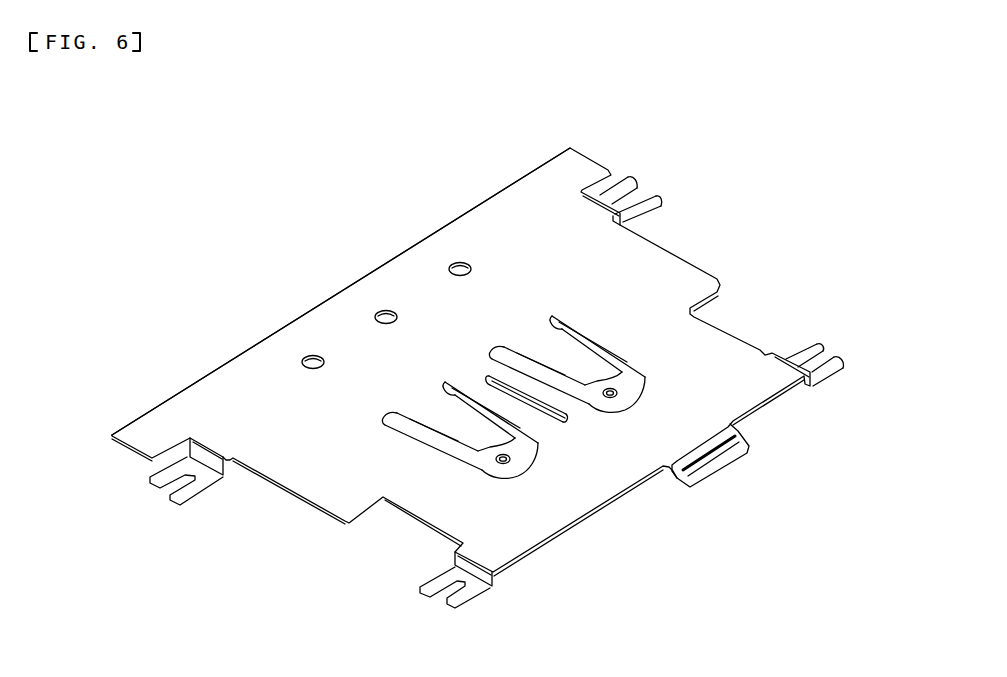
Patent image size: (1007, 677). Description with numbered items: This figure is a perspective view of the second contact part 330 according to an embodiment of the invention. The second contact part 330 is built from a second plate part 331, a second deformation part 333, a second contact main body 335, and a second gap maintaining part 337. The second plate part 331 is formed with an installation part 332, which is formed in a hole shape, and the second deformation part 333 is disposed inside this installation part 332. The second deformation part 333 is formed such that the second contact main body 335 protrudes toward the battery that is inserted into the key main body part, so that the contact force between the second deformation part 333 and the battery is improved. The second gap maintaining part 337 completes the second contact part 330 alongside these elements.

The second contact part 330 is at (409, 180).
The second plate part 331 is at (224, 393).
The installation part 332 is at (724, 447).
The second deformation part 333 is at (643, 297).
The second contact main body 335 is at (736, 322).
The second gap maintaining part 337 is at (587, 494).